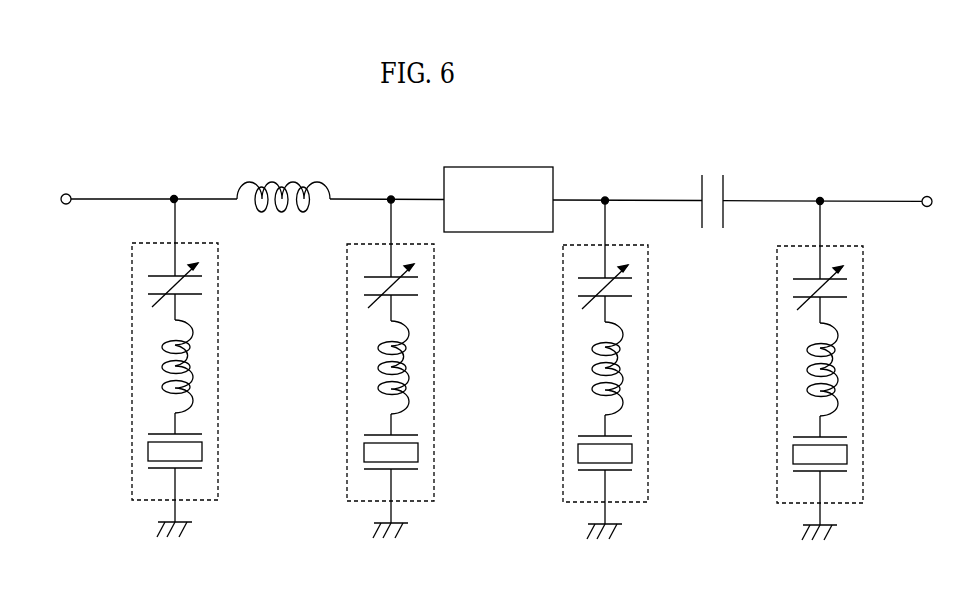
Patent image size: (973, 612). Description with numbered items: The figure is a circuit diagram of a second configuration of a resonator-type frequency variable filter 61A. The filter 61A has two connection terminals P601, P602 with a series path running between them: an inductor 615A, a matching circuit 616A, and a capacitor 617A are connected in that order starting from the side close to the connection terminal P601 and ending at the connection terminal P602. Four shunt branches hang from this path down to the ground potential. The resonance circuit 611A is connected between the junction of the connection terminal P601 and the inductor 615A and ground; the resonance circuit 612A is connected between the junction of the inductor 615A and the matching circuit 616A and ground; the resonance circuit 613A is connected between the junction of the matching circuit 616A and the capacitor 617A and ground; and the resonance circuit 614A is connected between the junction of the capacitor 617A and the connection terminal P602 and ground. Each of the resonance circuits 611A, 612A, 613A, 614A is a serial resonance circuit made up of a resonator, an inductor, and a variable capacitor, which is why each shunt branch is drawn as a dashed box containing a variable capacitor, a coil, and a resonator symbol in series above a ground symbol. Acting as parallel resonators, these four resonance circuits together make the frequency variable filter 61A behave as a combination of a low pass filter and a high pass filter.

The frequency variable filter 61A is at (697, 98).
The connection terminal P601 is at (63, 195).
The connection terminal P602 is at (937, 191).
The resonance circuit 611A is at (218, 320).
The resonance circuit 612A is at (434, 321).
The resonance circuit 613A is at (648, 322).
The resonance circuit 614A is at (863, 323).
The inductor 615A is at (327, 173).
The matching circuit 616A is at (532, 156).
The capacitor 617A is at (726, 184).